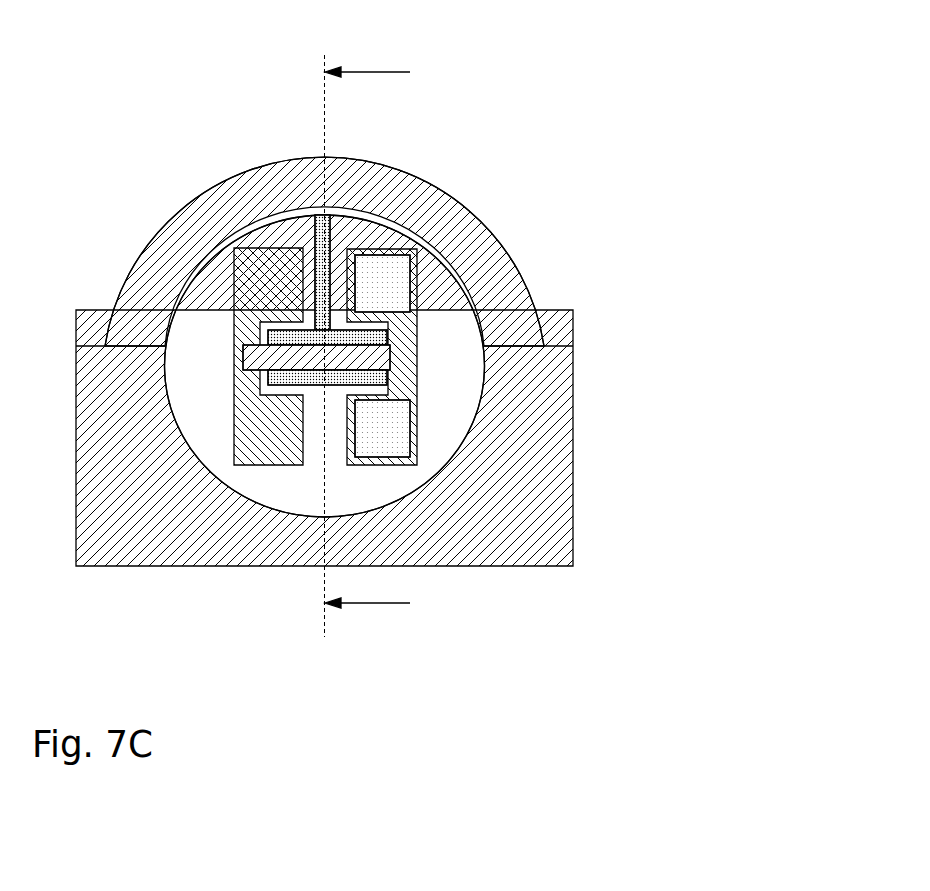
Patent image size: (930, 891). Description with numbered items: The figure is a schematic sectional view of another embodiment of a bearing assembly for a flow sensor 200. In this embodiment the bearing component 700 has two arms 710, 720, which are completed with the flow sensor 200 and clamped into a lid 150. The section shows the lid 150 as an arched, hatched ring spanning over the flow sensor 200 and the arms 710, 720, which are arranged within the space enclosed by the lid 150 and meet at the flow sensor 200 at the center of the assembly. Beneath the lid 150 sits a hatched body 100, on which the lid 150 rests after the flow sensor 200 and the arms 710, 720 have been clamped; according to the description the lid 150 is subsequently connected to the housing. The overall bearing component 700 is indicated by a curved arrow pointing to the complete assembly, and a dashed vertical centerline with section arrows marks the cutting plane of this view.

The base block 100 is at (520, 487).
The lid 150 is at (497, 252).
The flow sensor 200 is at (260, 297).
The bearing component 700 is at (393, 322).
The arm 710 is at (435, 252).
The arm 720 is at (316, 365).